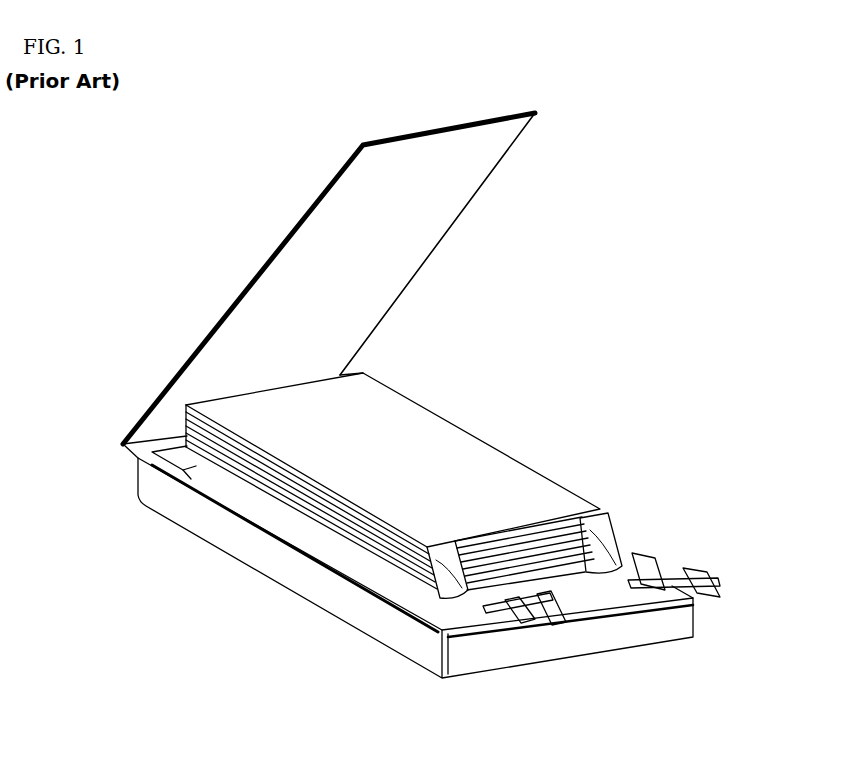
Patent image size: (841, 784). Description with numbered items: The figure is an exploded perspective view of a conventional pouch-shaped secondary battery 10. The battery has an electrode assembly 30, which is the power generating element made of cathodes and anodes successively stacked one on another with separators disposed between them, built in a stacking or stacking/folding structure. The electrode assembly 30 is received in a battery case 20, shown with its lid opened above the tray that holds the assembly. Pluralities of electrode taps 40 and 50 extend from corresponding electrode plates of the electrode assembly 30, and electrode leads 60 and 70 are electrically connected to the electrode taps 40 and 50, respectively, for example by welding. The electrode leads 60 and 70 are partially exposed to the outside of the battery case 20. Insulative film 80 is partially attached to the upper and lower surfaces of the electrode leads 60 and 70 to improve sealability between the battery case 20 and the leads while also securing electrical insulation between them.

The pouch-shaped secondary battery 10 is at (134, 208).
The battery case 20 is at (120, 443).
The electrode assembly 30 is at (481, 400).
The electrode tap 40 is at (365, 596).
The electrode tap 50 is at (620, 542).
The electrode lead 60 is at (422, 632).
The electrode lead 70 is at (670, 568).
The insulative film 80 is at (486, 632).